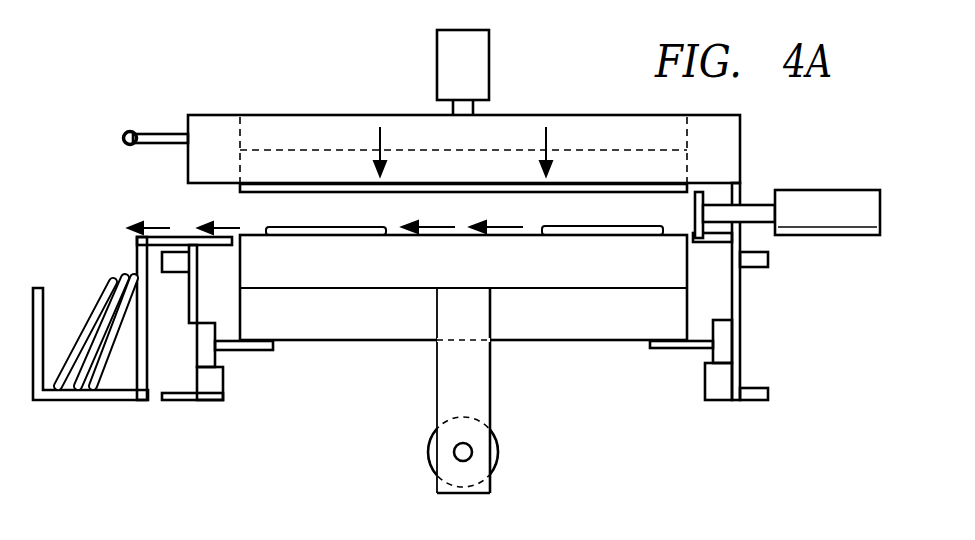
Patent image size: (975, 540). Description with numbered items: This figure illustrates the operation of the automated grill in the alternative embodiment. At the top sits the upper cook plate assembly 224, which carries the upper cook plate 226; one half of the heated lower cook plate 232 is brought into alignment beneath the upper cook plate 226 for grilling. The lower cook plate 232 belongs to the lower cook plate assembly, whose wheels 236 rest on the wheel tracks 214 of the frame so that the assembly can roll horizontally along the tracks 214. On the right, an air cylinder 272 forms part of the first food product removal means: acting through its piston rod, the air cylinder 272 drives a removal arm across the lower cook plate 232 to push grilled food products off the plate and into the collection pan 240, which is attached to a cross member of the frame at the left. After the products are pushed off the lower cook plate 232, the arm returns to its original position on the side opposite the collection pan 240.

The wheel tracks 214 is at (210, 397).
The upper assembly / cover with motor 224 is at (215, 121).
The upper cook plate 226 is at (262, 203).
The lower cook plate 232 is at (357, 275).
The wheels 236 is at (215, 358).
The collection pan 240 is at (105, 400).
The air cylinder 272 is at (820, 197).